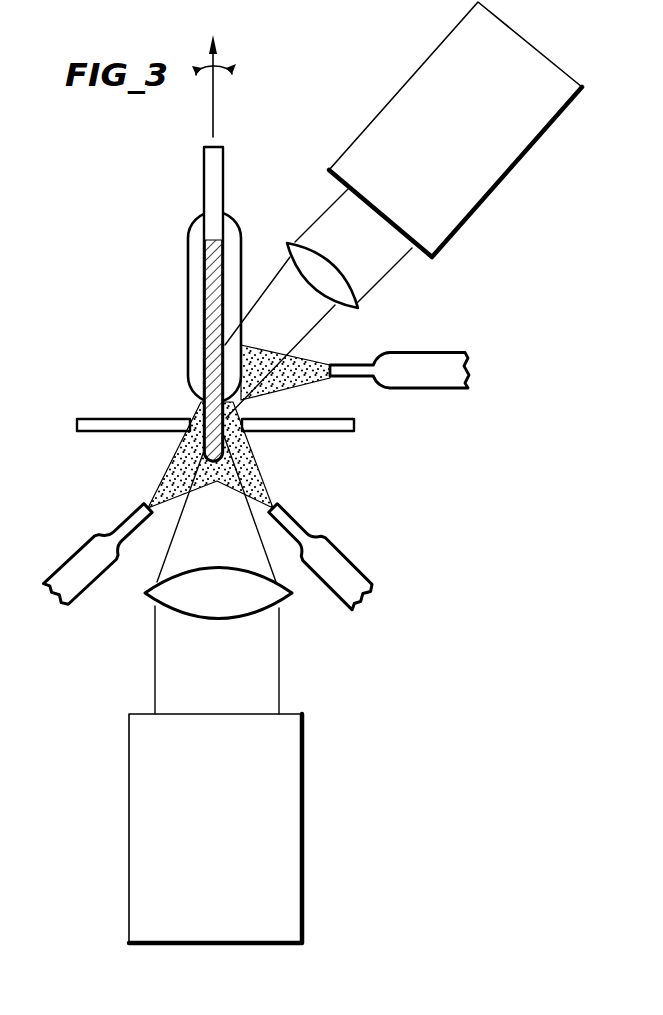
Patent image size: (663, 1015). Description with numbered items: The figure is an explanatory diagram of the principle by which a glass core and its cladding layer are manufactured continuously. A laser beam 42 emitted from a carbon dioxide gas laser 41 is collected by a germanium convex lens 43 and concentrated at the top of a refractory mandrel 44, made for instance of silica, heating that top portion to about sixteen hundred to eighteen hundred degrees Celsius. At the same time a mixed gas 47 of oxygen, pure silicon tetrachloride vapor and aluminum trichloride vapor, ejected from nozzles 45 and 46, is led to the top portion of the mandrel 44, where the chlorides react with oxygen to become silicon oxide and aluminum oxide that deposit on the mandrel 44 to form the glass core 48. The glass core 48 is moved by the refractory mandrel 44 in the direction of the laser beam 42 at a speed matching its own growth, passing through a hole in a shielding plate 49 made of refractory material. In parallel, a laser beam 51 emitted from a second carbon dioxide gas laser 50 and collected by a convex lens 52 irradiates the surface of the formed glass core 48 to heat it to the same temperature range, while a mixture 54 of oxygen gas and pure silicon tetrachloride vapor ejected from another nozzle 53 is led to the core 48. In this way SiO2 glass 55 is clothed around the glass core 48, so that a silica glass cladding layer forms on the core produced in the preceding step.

The carbon dioxide gas laser 41 is at (283, 768).
The laser beam 42 is at (253, 658).
The germanium convex lens 43 is at (180, 598).
The refractory mandrel 44 is at (214, 226).
The nozzle 45 is at (91, 556).
The nozzle 46 is at (328, 558).
The mixed gas 47 is at (232, 477).
The glass core 48 is at (210, 373).
The shielding plate 49 is at (117, 424).
The carbon dioxide gas laser 50 is at (493, 172).
The laser beam 51 is at (383, 258).
The convex lens 52 is at (293, 244).
The nozzle 53 is at (435, 362).
The mixture 54 is at (270, 368).
The SiO2 glass 55 is at (189, 308).